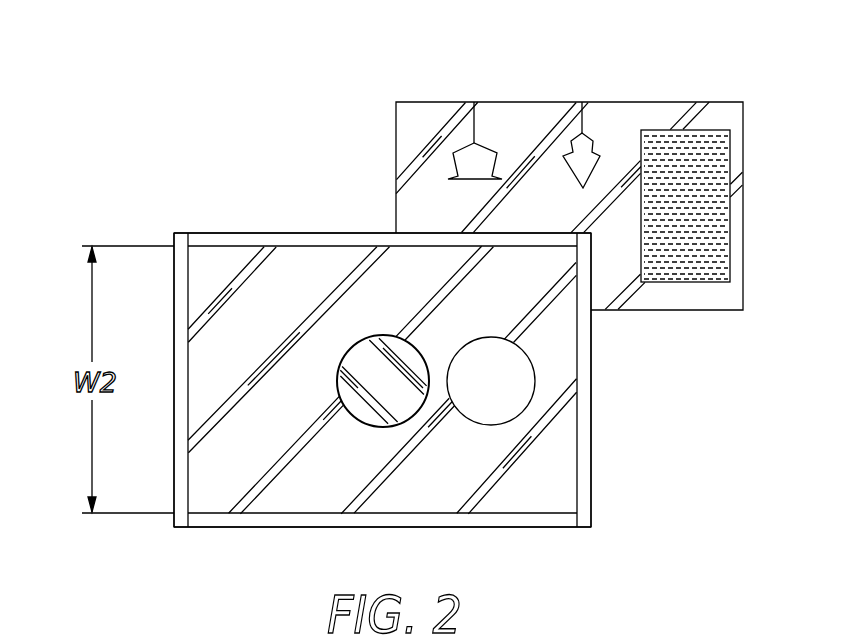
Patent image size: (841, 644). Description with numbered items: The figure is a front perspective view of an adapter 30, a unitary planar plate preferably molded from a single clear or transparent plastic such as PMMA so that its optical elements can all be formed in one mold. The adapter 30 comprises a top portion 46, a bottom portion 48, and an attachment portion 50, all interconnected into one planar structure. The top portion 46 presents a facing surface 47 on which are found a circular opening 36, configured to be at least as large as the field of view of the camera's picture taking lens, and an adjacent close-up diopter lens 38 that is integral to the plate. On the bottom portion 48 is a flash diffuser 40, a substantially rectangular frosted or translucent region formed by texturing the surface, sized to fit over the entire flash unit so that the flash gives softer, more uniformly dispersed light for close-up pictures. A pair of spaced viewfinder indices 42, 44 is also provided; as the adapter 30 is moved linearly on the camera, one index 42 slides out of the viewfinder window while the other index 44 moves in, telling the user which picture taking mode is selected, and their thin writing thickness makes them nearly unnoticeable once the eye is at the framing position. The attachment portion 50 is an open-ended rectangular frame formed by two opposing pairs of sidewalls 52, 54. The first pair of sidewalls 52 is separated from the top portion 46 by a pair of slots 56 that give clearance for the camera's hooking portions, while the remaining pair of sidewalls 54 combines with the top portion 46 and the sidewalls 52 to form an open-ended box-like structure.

The adapter 30 is at (182, 151).
The circular opening 36 is at (488, 420).
The close-up diopter lens 38 is at (352, 422).
The flash diffuser 40 is at (698, 130).
The viewfinder index 42 is at (472, 102).
The viewfinder index 44 is at (581, 102).
The top portion 46 is at (545, 487).
The facing surface 47 is at (562, 470).
The bottom portion 48 is at (383, 153).
The attachment portion 50 is at (160, 228).
The first pair of sidewalls 52 is at (279, 232).
The second pair of sidewalls 54 is at (173, 417).
The slots 56 is at (353, 247).